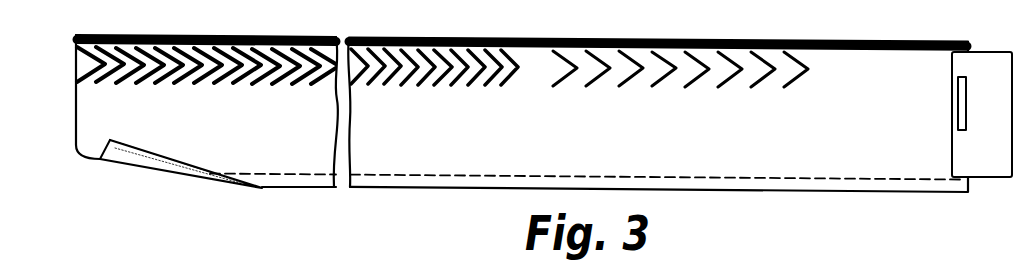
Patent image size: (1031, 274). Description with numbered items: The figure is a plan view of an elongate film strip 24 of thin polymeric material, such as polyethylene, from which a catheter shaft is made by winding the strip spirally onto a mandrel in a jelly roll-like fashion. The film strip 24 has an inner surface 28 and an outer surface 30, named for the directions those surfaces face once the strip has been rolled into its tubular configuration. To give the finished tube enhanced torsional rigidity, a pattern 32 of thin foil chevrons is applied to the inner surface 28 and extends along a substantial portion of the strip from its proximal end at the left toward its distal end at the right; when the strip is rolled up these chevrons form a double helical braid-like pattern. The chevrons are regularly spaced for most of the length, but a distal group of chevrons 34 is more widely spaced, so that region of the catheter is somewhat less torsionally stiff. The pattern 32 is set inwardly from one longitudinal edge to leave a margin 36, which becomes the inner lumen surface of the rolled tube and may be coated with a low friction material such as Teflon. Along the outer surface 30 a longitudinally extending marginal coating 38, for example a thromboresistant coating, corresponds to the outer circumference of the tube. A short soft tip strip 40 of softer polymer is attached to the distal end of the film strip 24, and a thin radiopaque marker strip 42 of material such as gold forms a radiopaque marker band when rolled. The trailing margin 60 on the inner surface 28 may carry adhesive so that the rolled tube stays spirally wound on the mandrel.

The film strip 24 is at (745, 160).
The inner surface 28 is at (86, 103).
The outer surface 30 is at (100, 160).
The pattern of chevrons 32 is at (252, 99).
The distal group of chevrons 34 is at (813, 92).
The margin 36 is at (257, 36).
The marginal coating 38 is at (143, 153).
The short soft tip strip 40 is at (994, 164).
The radiopaque marker strip 42 is at (967, 104).
The trailing margin 60 is at (370, 180).